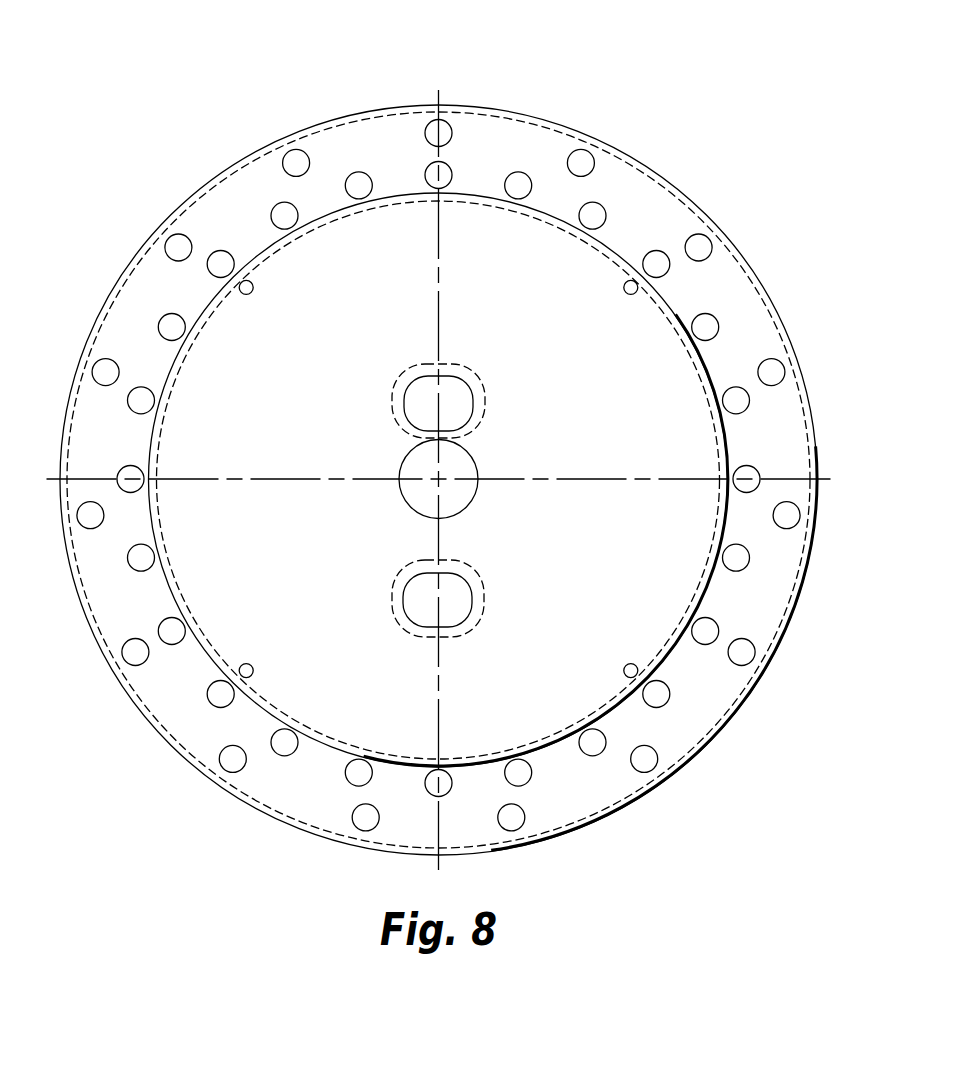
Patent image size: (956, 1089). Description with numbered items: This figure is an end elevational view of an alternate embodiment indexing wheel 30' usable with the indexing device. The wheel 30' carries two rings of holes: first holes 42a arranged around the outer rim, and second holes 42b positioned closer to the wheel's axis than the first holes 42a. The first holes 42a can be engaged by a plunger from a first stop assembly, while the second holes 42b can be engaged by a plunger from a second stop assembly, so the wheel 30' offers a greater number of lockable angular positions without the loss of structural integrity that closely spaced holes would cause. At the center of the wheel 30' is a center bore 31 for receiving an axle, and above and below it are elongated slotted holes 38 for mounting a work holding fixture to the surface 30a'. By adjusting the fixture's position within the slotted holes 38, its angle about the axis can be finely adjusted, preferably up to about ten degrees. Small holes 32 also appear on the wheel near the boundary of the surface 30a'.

The alternate wheel 30' is at (438, 446).
The surface 30a' is at (499, 480).
The first holes 42a is at (597, 166).
The second holes 42b is at (608, 223).
The alignment holes 32 is at (637, 297).
The center bore 31 is at (452, 503).
The elongated slotted holes 38 is at (463, 398).